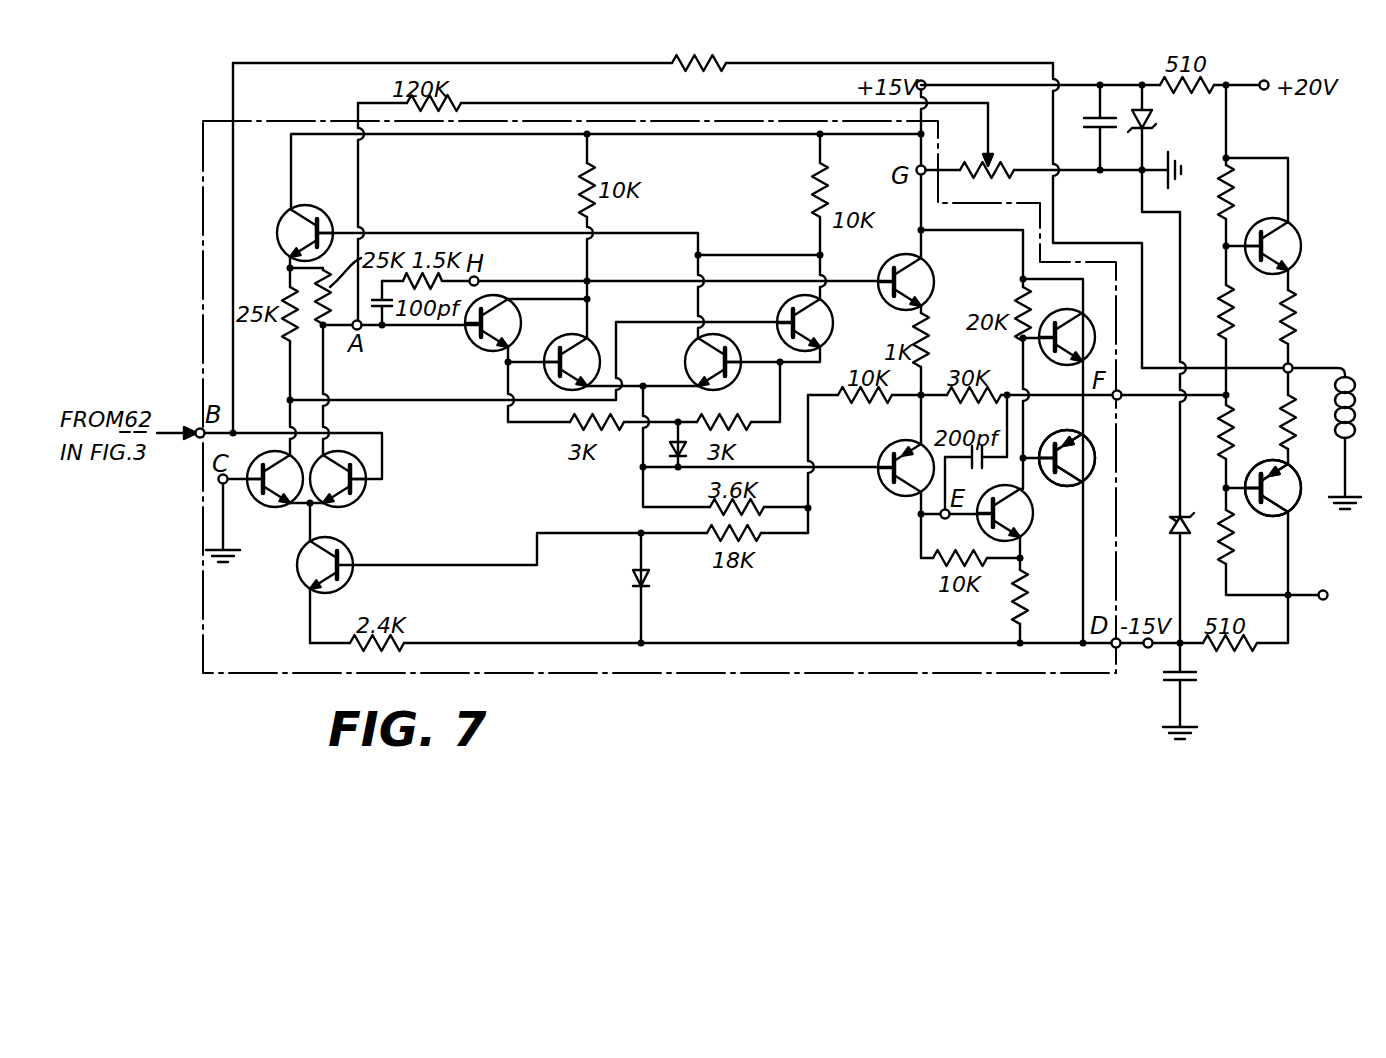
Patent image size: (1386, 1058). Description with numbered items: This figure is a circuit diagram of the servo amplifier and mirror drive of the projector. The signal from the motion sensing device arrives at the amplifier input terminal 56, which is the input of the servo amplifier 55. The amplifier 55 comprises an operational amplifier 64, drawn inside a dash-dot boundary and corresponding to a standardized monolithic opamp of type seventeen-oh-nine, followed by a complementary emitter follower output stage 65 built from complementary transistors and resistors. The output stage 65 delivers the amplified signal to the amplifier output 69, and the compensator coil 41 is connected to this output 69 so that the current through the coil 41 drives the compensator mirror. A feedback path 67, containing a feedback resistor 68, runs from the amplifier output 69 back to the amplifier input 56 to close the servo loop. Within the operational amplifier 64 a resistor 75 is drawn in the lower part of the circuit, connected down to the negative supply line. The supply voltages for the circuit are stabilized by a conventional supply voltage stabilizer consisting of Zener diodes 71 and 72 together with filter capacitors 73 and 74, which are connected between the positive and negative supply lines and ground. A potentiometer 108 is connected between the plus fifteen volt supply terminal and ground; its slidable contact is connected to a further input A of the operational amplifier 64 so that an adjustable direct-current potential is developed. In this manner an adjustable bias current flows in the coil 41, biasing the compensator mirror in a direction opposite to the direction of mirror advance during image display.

The compensator coil 41 is at (1336, 440).
The amplifier 55 is at (1098, 506).
The amplifier input terminal 56 is at (197, 429).
The operational amplifier 64 is at (742, 198).
The complementary emitter follower output stage 65 is at (1266, 365).
The feedback path 67 is at (228, 89).
The feedback resistor 68 is at (727, 62).
The amplifier output 69 is at (1292, 365).
The Zener diode 71 is at (1152, 120).
The Zener diode 72 is at (1174, 533).
The filter capacitor 73 is at (1096, 128).
The filter capacitor 74 is at (1190, 677).
The resistor 75 is at (1036, 600).
The potentiometer 108 is at (1004, 148).